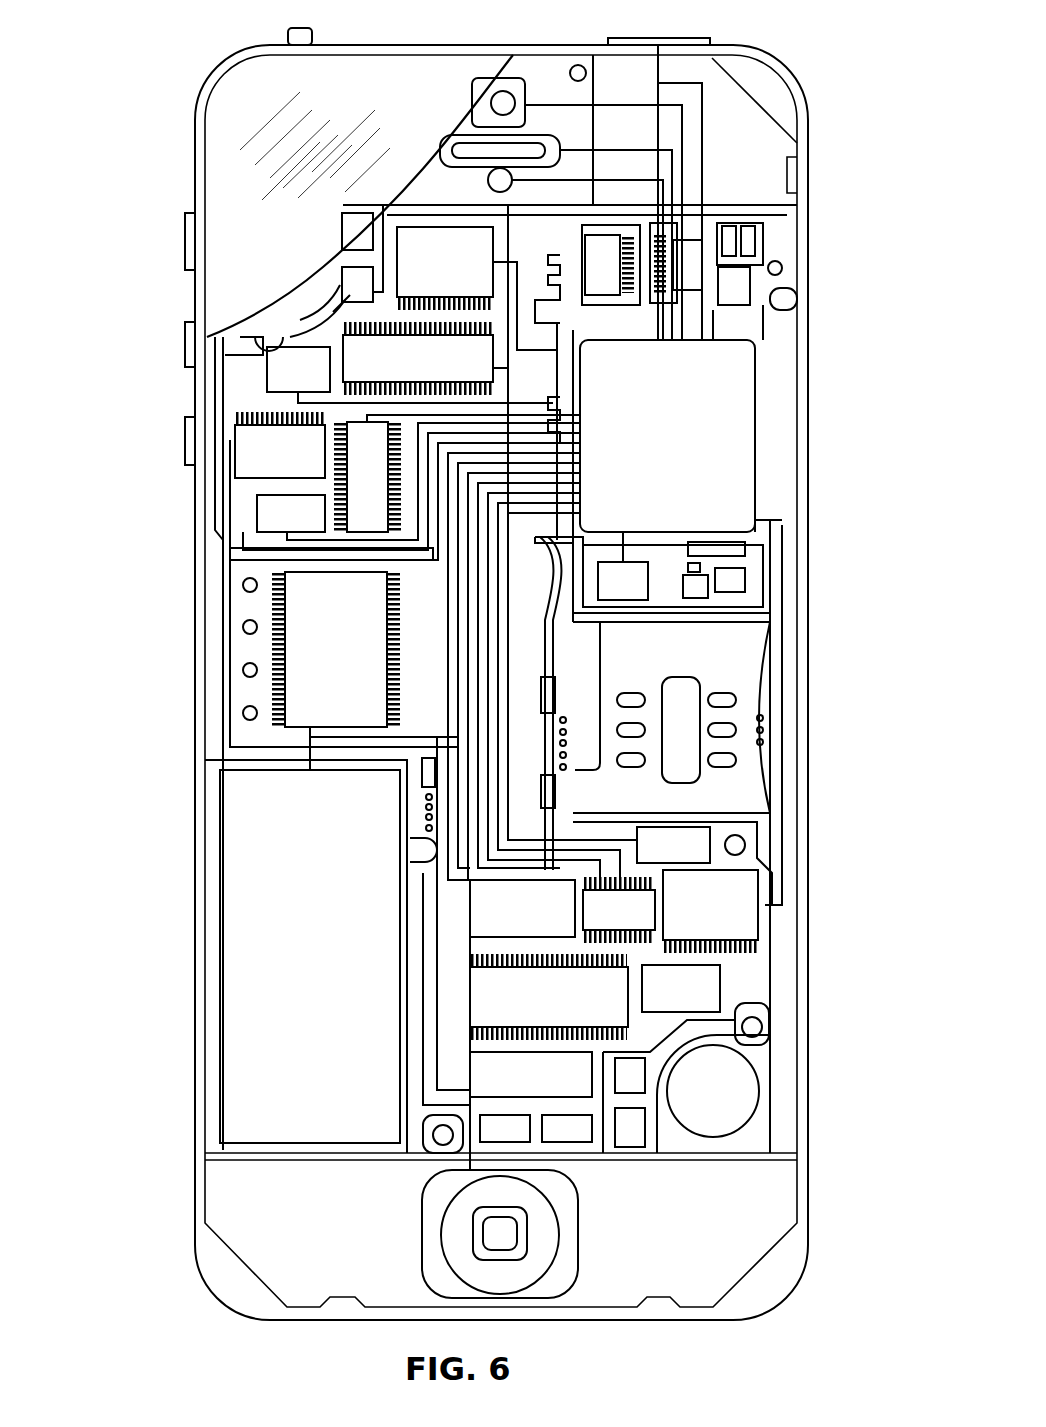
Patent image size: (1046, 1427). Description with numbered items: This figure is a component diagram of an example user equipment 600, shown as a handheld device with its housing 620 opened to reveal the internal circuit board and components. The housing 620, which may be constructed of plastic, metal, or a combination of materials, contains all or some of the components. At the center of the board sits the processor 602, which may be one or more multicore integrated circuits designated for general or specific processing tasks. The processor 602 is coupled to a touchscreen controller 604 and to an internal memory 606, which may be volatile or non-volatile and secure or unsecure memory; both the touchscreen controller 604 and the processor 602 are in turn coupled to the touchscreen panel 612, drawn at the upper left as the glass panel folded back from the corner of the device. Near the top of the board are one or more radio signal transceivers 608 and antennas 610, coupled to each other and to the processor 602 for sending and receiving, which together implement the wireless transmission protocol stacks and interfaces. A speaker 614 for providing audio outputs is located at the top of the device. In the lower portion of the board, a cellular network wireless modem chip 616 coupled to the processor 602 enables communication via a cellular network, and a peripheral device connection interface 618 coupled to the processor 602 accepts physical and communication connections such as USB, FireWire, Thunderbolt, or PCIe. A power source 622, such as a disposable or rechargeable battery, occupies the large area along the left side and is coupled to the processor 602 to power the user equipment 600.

The user equipment 600 is at (160, 88).
The processor 602 is at (688, 447).
The touchscreen controller 604 is at (466, 274).
The internal memory 606 is at (438, 370).
The radio signal transceivers 608 is at (707, 240).
The antennas 610 is at (752, 290).
The touchscreen panel 612 is at (222, 163).
The speakers 614 is at (458, 133).
The cellular network wireless modem chip 616 is at (570, 1010).
The peripheral device connection interface 618 is at (551, 1087).
The housing 620 is at (808, 1172).
The power source 622 is at (331, 967).